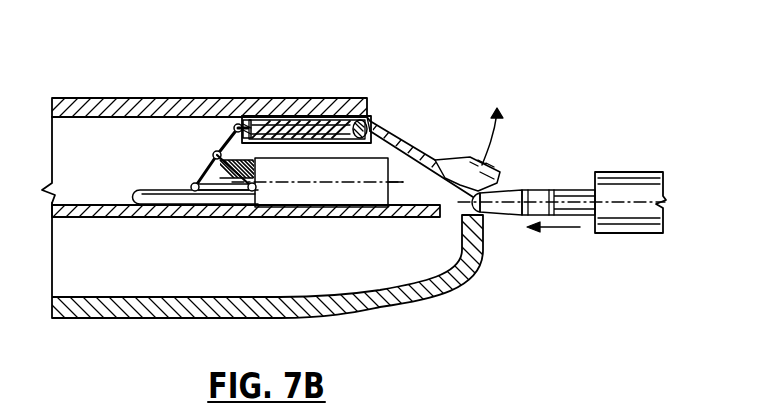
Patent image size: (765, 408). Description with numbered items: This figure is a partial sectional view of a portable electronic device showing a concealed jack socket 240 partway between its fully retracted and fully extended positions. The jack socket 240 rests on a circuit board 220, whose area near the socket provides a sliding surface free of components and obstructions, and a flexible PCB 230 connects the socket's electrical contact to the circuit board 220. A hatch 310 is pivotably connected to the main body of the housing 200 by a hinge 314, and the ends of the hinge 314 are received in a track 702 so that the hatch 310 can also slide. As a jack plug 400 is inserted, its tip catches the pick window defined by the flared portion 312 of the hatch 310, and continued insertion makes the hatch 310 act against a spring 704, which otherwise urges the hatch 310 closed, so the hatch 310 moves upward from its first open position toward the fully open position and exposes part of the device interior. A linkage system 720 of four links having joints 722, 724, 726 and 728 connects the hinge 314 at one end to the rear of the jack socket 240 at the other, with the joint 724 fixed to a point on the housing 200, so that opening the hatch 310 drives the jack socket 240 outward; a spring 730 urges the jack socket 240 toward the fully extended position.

The housing 200 is at (74, 98).
The circuit board 220 is at (85, 219).
The flexible PCB 230 is at (132, 201).
The jack socket 240 is at (366, 197).
The hatch 310 is at (435, 160).
The flared portion 312 is at (485, 163).
The hinge 314 is at (379, 124).
The jack plug 400 is at (630, 172).
The track 702 is at (243, 122).
The spring 704 is at (258, 116).
The linkage system 720 is at (186, 156).
The joint 722 is at (235, 128).
The joint 724 is at (214, 152).
The joint 726 is at (190, 190).
The joint 728 is at (247, 192).
The spring 730 is at (310, 117).